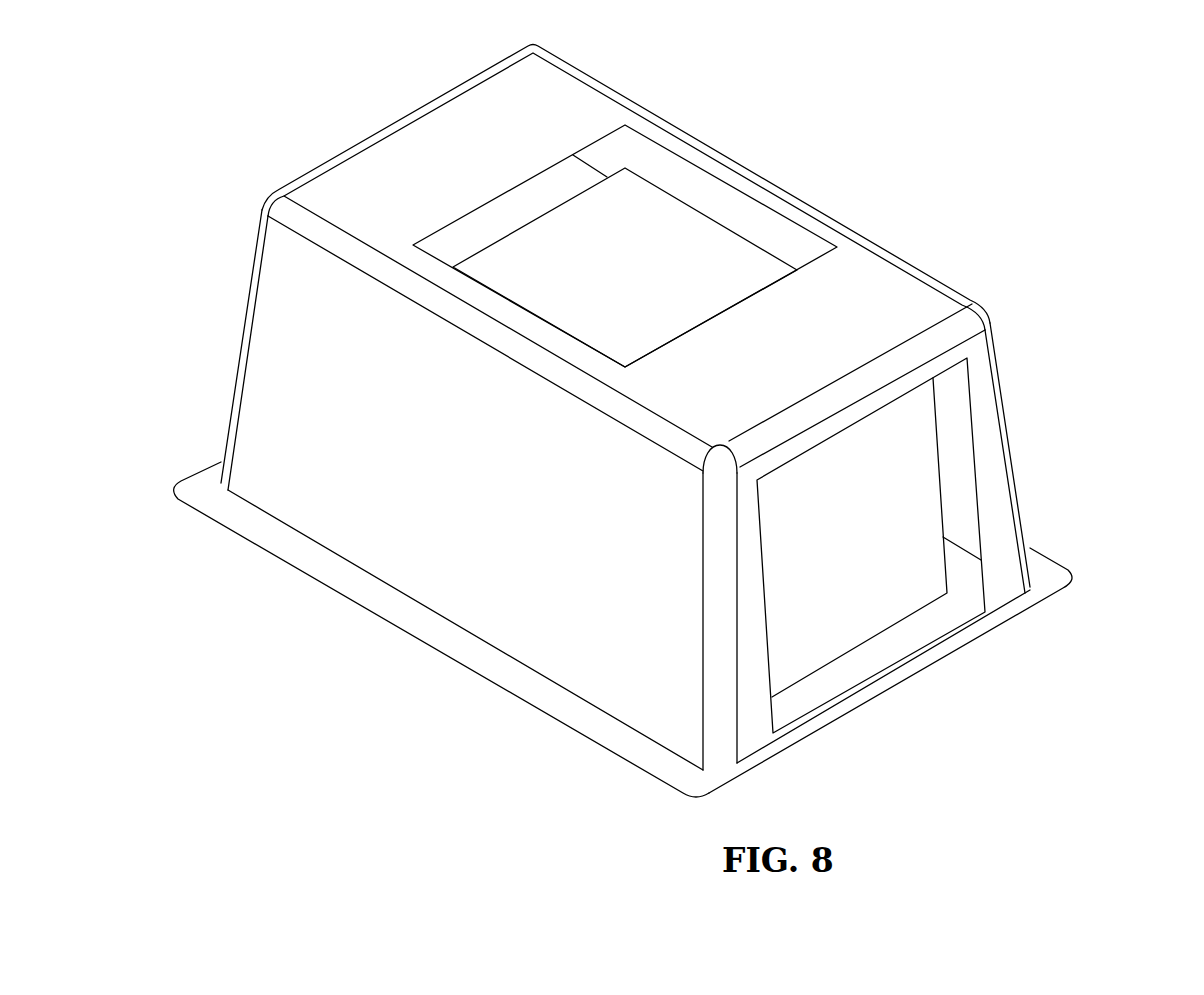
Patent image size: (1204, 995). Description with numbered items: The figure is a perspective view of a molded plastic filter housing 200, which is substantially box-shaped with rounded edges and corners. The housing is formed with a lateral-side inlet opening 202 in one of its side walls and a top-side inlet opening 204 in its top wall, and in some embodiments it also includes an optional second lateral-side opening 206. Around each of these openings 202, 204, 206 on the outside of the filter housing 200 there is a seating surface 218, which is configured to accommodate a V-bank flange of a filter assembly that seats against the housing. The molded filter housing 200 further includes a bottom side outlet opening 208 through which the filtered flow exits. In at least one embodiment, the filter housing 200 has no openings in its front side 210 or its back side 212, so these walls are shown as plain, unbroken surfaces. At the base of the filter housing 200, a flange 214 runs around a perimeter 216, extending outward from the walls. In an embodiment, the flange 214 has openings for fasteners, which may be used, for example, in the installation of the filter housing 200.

The molded filter housing 200 is at (665, 461).
The lateral-side inlet opening 202 is at (922, 475).
The top-side inlet opening 204 is at (677, 187).
The second lateral-side opening 206 is at (318, 140).
The bottom side outlet opening 208 is at (565, 738).
The front side 210 is at (522, 622).
The back side 212 is at (886, 221).
The flange 214 is at (677, 793).
The perimeter 216 is at (638, 770).
The seating surface 218 is at (573, 135).